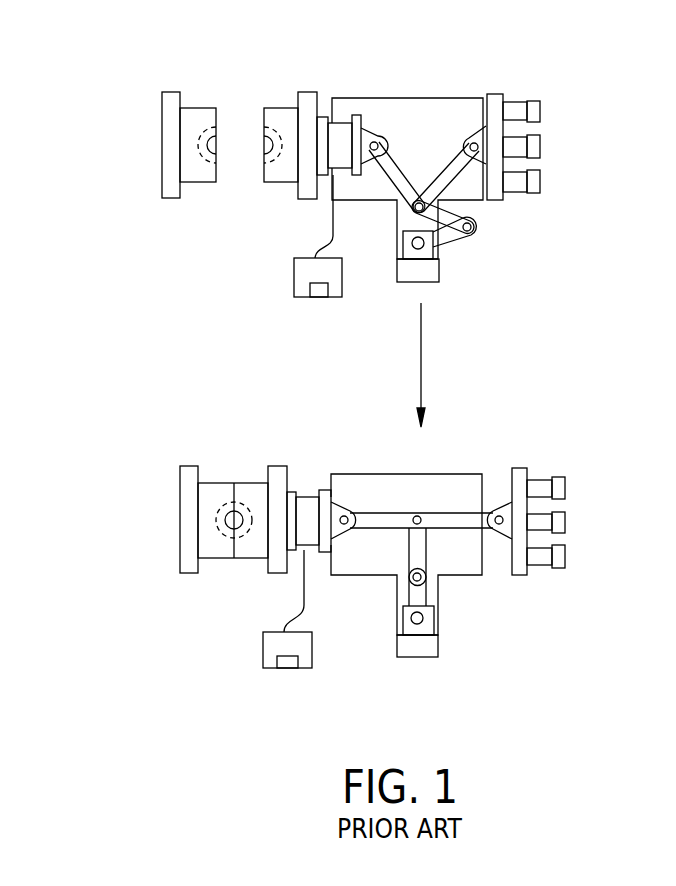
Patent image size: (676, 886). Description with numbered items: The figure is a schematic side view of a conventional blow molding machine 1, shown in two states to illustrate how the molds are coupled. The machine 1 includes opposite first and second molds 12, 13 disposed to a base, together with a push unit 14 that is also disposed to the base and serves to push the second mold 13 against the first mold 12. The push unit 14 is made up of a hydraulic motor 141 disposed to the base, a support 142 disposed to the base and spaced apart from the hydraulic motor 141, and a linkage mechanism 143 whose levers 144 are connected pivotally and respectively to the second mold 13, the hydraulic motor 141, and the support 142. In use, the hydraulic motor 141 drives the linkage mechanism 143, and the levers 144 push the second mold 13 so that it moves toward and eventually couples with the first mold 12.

The blow molding machine 1 is at (506, 81).
The first mold 12 is at (174, 139).
The second mold 13 is at (312, 102).
The push unit 14 is at (415, 386).
The hydraulic motor 141 is at (427, 277).
The support 142 is at (493, 132).
The linkage mechanism 143 is at (470, 240).
The levers 144 is at (447, 218).